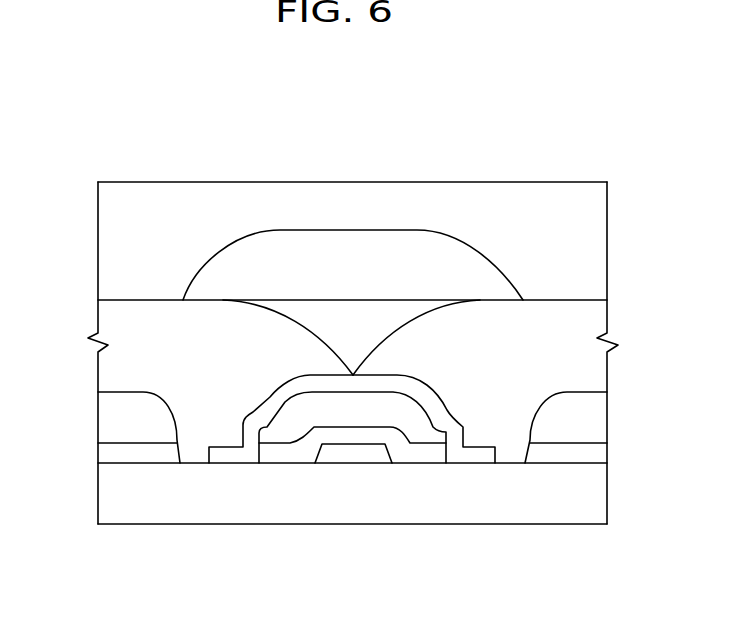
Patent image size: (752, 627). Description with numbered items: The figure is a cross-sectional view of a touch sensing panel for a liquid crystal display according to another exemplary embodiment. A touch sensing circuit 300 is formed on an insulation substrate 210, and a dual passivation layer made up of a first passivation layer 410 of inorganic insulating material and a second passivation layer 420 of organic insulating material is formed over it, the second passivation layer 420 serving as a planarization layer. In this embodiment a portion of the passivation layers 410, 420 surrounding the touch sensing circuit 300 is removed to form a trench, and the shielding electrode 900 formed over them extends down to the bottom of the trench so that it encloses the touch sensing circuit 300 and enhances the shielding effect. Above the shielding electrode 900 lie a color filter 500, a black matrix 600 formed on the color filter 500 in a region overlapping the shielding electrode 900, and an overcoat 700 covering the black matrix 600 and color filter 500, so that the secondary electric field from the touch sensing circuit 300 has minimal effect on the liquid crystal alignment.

The insulation substrate 210 is at (162, 494).
The touch sensing circuit 300 is at (348, 453).
The first passivation layer 410 is at (413, 455).
The second passivation layer 420 is at (420, 422).
The color filter 500 is at (153, 315).
The black matrix 600 is at (308, 253).
The overcoat 700 is at (515, 218).
The shielding electrode 900 is at (243, 453).